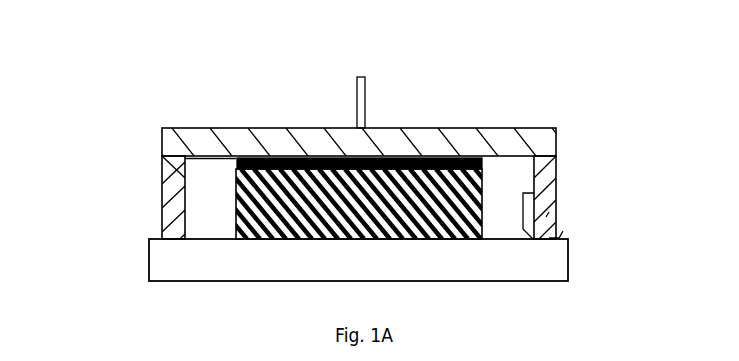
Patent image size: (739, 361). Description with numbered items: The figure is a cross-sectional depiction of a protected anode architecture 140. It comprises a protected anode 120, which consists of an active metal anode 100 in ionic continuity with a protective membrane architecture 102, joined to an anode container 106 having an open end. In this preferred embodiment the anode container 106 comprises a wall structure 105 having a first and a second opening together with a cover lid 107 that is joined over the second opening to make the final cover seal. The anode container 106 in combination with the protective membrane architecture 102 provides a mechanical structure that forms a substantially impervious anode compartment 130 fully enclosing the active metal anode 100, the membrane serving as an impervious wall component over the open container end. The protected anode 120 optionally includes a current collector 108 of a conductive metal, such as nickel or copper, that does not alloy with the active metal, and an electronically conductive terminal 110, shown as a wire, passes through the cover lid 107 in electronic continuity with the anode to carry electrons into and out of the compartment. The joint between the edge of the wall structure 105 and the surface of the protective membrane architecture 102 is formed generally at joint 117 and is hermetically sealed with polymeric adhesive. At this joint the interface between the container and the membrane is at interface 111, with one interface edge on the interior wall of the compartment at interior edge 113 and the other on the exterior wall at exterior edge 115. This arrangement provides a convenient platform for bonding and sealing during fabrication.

The protected anode architecture 140 is at (492, 44).
The electronically conductive terminal 110 is at (357, 102).
The anode container 106 is at (630, 73).
The cover lid 107 is at (543, 130).
The wall structure 105 is at (556, 170).
The protected anode 120 is at (90, 152).
The current collector 108 is at (185, 163).
The anode compartment 130 is at (223, 194).
The active metal anode 100 is at (236, 210).
The protective membrane architecture 102 is at (149, 260).
The joint 117 is at (625, 172).
The interior interface edge 113 is at (534, 193).
The joint interface 111 is at (549, 212).
The exterior interface edge 115 is at (563, 231).